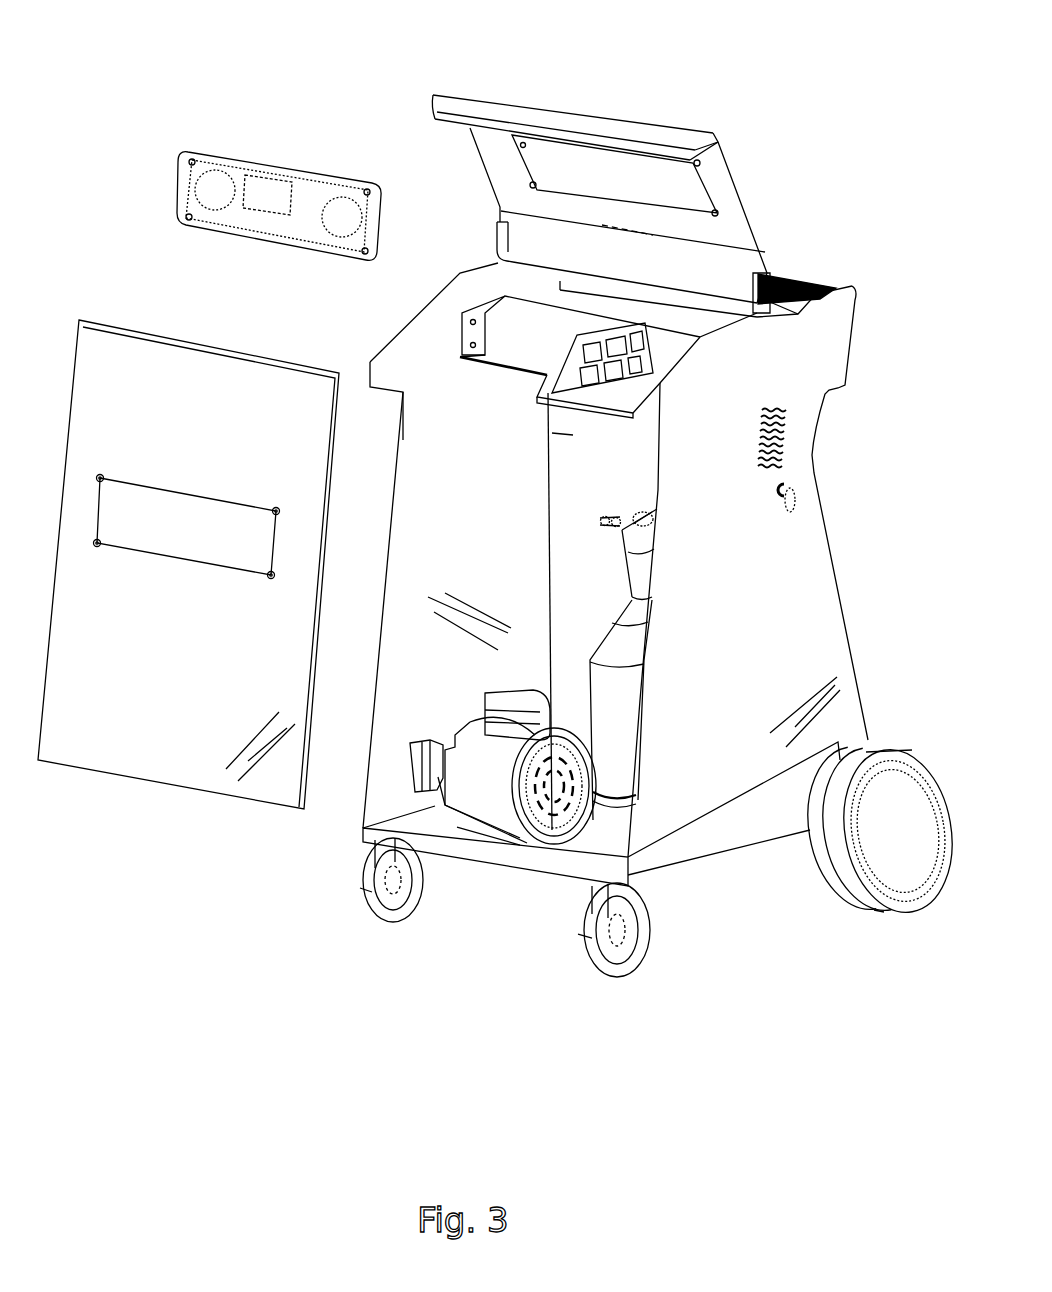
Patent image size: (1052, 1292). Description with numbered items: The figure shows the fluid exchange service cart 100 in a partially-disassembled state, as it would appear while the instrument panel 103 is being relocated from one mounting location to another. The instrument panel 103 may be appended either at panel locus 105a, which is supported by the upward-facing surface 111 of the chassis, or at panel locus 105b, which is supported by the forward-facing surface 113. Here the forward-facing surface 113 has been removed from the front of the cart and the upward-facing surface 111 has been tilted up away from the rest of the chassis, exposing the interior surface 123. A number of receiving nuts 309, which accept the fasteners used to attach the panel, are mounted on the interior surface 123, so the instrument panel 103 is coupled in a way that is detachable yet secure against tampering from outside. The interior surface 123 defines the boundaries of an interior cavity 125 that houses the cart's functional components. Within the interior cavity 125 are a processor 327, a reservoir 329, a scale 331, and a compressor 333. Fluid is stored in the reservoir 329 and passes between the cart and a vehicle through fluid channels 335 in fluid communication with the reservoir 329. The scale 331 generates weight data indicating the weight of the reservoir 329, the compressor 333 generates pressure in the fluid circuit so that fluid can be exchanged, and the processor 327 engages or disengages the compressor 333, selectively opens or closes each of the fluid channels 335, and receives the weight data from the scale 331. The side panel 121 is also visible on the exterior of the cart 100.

The fluid exchange service cart 100 is at (785, 82).
The instrument panel 103 is at (303, 165).
The panel locus 105a is at (766, 200).
The panel locus 105b is at (95, 516).
The upward-facing surface 111 is at (665, 132).
The forward-facing surface 113 is at (182, 423).
The side panel 121 is at (766, 589).
The interior surface 123 is at (454, 463).
The interior cavity 125 is at (425, 548).
The receiving nuts 309 is at (527, 150).
The processor 327 is at (577, 350).
The reservoir 329 is at (597, 683).
The scale 331 is at (597, 855).
The compressor 333 is at (470, 734).
The fluid channels 335 is at (612, 518).